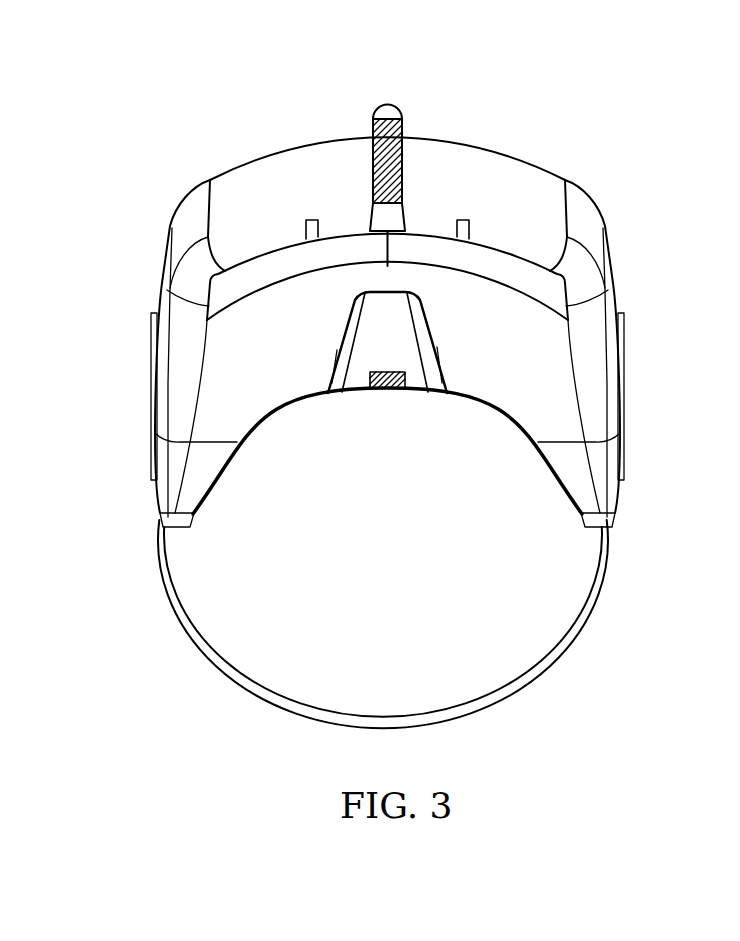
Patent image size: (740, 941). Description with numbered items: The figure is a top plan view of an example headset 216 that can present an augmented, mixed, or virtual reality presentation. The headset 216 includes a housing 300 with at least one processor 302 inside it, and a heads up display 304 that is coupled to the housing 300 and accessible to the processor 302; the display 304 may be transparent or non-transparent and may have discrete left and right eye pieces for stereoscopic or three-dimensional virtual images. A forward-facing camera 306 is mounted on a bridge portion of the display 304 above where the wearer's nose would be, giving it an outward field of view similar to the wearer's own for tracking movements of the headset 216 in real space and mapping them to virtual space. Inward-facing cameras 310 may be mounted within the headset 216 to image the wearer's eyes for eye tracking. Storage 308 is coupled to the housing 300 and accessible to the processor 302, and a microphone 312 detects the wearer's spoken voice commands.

The headset 216 is at (133, 41).
The housing 300 is at (596, 597).
The processor 302 is at (272, 286).
The heads up display 304 is at (283, 150).
The forward-facing camera 306 is at (401, 108).
The storage 308 is at (480, 288).
The inward-facing cameras 310 is at (307, 220).
The microphone 312 is at (388, 391).